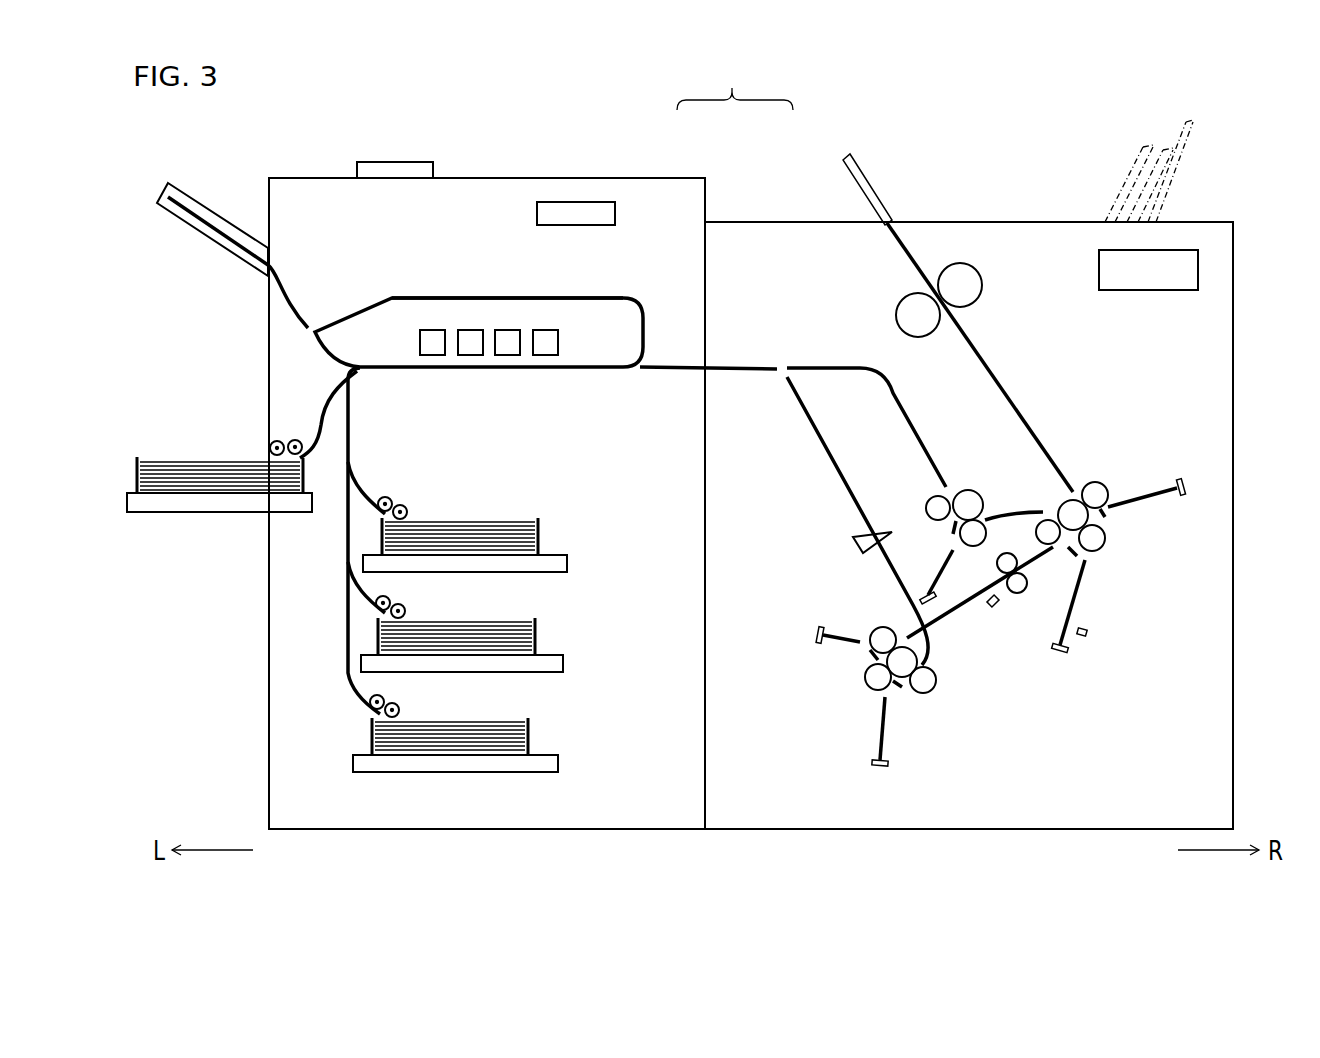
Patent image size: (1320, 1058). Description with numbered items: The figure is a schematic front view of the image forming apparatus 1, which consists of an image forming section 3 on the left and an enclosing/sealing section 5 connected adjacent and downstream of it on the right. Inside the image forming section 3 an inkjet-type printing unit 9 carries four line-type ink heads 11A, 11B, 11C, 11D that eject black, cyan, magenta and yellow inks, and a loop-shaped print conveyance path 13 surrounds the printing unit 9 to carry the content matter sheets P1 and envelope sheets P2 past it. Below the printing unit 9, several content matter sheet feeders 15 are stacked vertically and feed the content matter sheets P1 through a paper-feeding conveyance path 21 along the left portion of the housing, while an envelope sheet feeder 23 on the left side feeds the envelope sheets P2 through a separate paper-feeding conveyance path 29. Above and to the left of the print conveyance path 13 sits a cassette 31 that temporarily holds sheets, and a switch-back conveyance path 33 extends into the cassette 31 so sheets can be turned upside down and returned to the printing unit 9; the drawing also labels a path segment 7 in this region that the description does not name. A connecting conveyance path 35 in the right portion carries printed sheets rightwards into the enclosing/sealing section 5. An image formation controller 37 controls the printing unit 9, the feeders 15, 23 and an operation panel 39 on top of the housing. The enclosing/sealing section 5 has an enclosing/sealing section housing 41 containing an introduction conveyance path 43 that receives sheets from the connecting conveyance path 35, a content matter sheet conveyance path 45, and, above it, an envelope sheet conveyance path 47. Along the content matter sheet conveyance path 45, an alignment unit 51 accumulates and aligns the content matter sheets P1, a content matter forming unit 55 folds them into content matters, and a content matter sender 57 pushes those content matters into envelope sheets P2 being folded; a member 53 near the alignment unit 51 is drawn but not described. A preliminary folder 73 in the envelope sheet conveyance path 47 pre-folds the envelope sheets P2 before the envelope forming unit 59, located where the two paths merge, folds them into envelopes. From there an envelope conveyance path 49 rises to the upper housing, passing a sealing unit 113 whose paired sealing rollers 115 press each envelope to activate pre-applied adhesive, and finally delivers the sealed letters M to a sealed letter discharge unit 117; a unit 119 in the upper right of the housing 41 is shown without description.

The image forming apparatus 1 is at (741, 88).
The image forming section 3 is at (624, 174).
The enclosing/sealing section 5 is at (778, 218).
The manual feed conveyance path 7 is at (268, 330).
The printing unit 9 is at (581, 326).
The line-type ink head 11A is at (420, 343).
The line-type ink head 11B is at (470, 350).
The line-type ink head 11C is at (508, 352).
The line-type ink head 11D is at (558, 343).
The print conveyance path 13 is at (452, 295).
The content matter sheet feeders 15 is at (552, 552).
The paper-feeding conveyance path 21 is at (352, 422).
The envelope sheet feeder 23 is at (215, 516).
The paper-feeding conveyance path 29 is at (322, 410).
The cassette 31 is at (167, 190).
The switch-back conveyance path 33 is at (220, 228).
The connecting conveyance path 35 is at (680, 365).
The image formation controller 37 is at (615, 212).
The operation panel 39 is at (380, 161).
The enclosing/sealing section housing 41 is at (1233, 452).
The introduction conveyance path 43 is at (740, 365).
The content matter sheet conveyance path 45 is at (830, 445).
The envelope sheet conveyance path 47 is at (838, 365).
The envelope conveyance path 49 is at (1025, 415).
The alignment unit 51 is at (853, 524).
The flapper member 53 is at (852, 541).
The content matter forming unit 55 is at (853, 628).
The content matter sender 57 is at (1010, 608).
The envelope forming unit 59 is at (1110, 474).
The preliminary folder 73 is at (960, 470).
The sealing unit 113 is at (955, 258).
The paired sealing rollers 115 is at (968, 307).
The sealed letter discharge unit 117 is at (973, 220).
The post-processing controller 119 is at (1198, 270).
The sealed letters M is at (1118, 185).
The content matter sheets P1 is at (490, 536).
The envelope sheets P2 is at (180, 470).